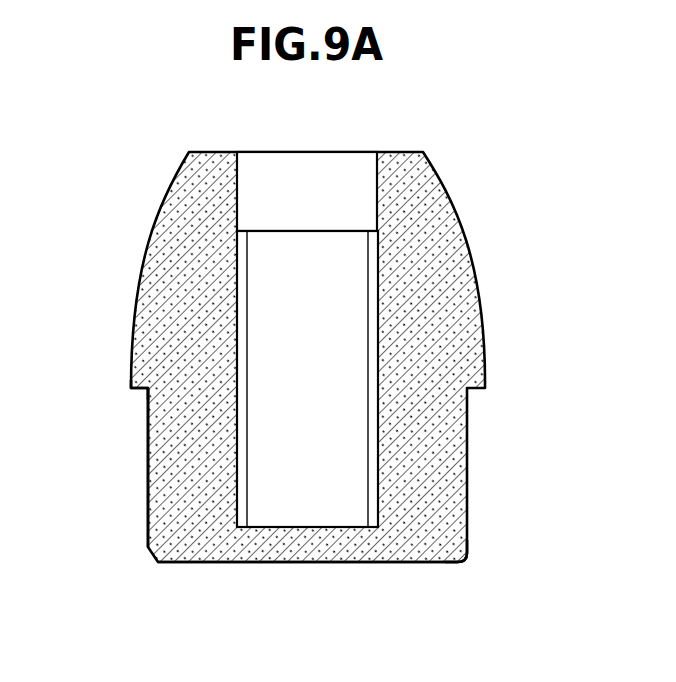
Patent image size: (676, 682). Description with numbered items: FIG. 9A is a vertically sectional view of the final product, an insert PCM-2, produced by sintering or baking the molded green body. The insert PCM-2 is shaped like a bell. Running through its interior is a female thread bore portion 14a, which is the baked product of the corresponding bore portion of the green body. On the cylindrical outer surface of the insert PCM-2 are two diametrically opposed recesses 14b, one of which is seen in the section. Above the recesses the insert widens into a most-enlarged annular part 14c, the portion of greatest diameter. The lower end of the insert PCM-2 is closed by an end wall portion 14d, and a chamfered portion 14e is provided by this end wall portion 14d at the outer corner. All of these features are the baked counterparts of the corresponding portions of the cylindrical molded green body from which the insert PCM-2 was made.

The insert PCM-2 is at (462, 222).
The female thread bore portion 14a is at (248, 466).
The recess 14b is at (148, 495).
The most-enlarged annular part 14c is at (135, 396).
The end wall portion 14d is at (308, 553).
The chamfered portion 14e is at (465, 557).